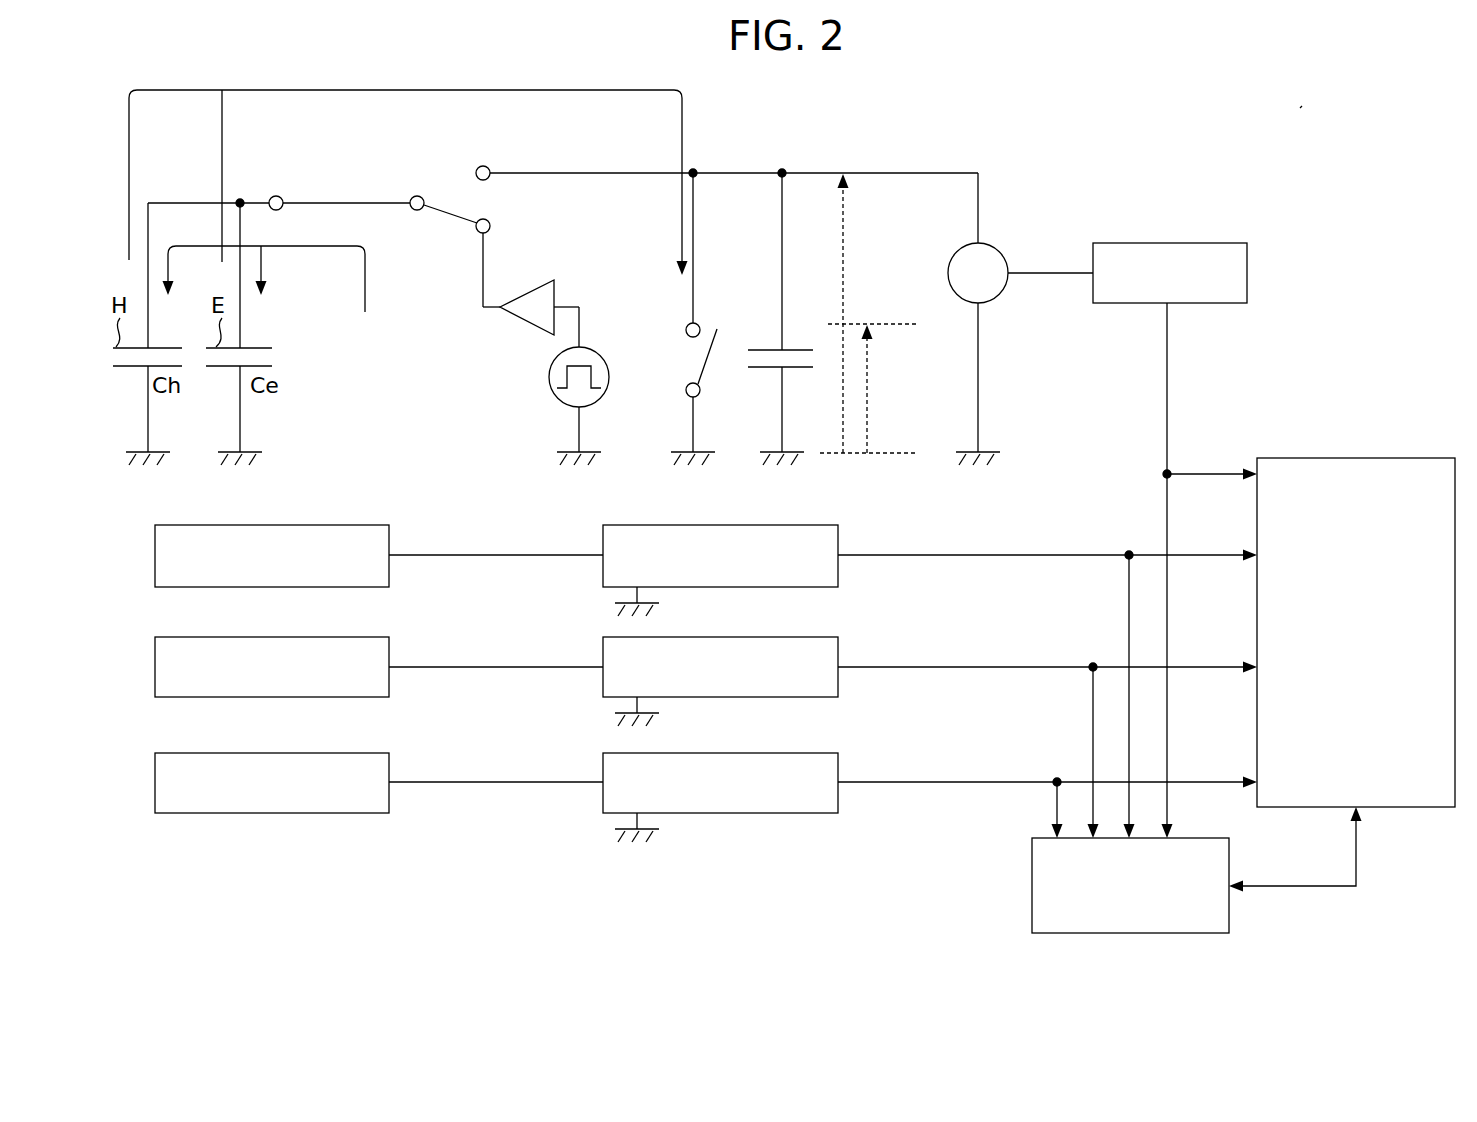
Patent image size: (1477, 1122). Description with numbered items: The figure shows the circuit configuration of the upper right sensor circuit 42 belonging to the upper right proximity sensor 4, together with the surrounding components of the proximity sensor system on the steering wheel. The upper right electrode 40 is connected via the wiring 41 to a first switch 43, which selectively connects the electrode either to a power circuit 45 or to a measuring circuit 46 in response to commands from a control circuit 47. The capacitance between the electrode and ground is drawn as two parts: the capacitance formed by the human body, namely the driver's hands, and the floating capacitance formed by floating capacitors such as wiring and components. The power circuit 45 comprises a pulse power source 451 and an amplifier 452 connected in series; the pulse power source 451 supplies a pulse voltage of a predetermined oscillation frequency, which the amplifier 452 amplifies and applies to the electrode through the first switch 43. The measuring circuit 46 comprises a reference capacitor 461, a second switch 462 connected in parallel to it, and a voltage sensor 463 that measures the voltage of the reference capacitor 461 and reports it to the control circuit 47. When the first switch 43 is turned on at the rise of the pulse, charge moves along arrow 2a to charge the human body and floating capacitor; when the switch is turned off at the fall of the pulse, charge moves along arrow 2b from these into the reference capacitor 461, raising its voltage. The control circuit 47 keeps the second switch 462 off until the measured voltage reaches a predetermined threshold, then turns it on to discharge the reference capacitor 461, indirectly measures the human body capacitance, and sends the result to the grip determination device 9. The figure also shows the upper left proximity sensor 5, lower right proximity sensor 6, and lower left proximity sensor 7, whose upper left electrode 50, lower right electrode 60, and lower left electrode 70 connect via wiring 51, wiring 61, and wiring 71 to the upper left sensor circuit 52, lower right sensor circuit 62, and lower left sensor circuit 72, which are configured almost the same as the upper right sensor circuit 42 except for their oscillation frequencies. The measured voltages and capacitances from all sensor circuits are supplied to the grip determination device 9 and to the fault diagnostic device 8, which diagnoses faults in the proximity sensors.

The arrow 2a is at (322, 250).
The arrow 2b is at (277, 90).
The upper right proximity sensor 4 is at (1304, 104).
The upper left proximity sensor 5 is at (888, 522).
The lower right proximity sensor 6 is at (888, 635).
The lower left proximity sensor 7 is at (888, 748).
The fault diagnostic device 8 is at (1194, 838).
The grip determination device 9 is at (1416, 458).
The upper right electrode 40 is at (276, 196).
The wiring 41 is at (317, 202).
The upper right sensor circuit 42 is at (1050, 132).
The first switch 43 is at (456, 156).
The power circuit 45 is at (584, 250).
The measuring circuit 46 is at (780, 144).
The control circuit 47 is at (1232, 243).
The upper left electrode 50 is at (352, 525).
The wiring 51 is at (534, 554).
The upper left sensor circuit 52 is at (808, 526).
The lower right electrode 60 is at (352, 637).
The wiring 61 is at (534, 666).
The lower right sensor circuit 62 is at (808, 637).
The lower left electrode 70 is at (352, 753).
The wiring 71 is at (534, 781).
The lower left sensor circuit 72 is at (808, 753).
The pulse power source 451 is at (596, 352).
The amplifier 452 is at (521, 295).
The reference capacitor 461 is at (752, 348).
The second switch 462 is at (702, 355).
The voltage sensor 463 is at (1000, 252).